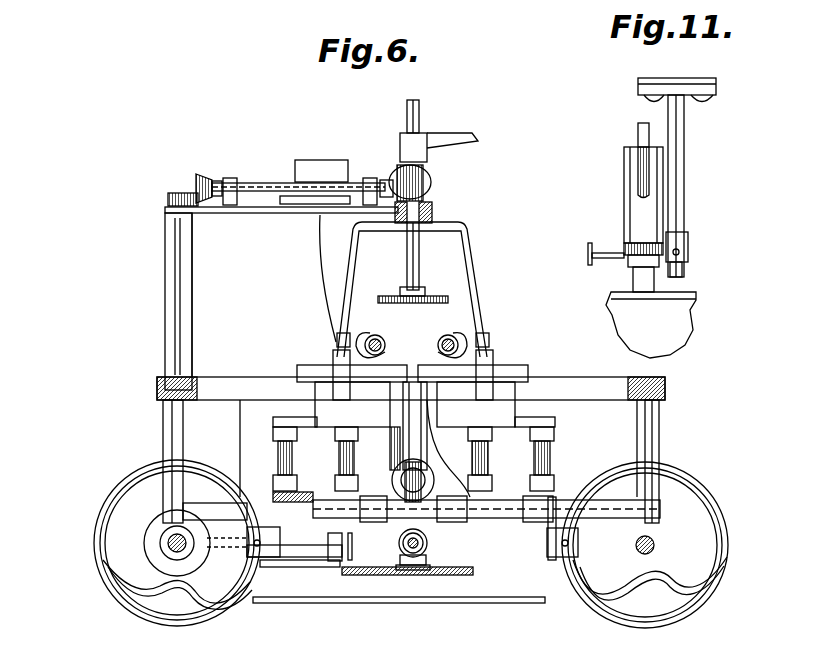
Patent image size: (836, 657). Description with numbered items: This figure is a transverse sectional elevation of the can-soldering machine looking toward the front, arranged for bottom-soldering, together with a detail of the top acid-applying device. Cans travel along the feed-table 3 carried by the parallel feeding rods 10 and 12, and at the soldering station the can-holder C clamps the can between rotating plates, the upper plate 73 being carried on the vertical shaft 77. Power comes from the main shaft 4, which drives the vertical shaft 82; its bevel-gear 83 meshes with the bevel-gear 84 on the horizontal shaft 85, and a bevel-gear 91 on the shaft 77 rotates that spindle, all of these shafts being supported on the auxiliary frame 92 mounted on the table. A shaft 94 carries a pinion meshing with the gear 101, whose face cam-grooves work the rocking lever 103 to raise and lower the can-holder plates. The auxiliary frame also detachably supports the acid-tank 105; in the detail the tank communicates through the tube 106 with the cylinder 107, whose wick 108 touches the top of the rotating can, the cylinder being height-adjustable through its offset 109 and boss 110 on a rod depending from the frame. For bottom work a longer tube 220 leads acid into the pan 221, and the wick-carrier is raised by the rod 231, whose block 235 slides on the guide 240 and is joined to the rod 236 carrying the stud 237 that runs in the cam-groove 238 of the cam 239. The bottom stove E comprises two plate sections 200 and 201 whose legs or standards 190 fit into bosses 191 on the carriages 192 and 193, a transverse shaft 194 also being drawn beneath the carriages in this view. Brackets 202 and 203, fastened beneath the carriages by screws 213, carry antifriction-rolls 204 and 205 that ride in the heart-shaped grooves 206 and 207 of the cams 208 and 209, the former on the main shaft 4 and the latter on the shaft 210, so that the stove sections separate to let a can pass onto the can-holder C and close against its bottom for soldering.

In FIG. 6, the feed-table 3 is at (580, 378).
In FIG. 6, the main shaft 4 is at (180, 533).
In FIG. 6, the rod 10 is at (376, 335).
In FIG. 6, the rod 12 is at (448, 335).
In FIG. 6, the upper plate 73 is at (440, 296).
In FIG. 6, the shaft 77 is at (419, 254).
In FIG. 6, the vertical shaft 82 is at (190, 288).
In FIG. 6, the bevel-gear 83 is at (172, 196).
In FIG. 6, the bevel-gear 84 is at (206, 175).
In FIG. 6, the horizontal shaft 85 is at (258, 183).
In FIG. 6, the bevel-gear 91 is at (432, 180).
In FIG. 6, the auxiliary frame 92 is at (354, 262).
In FIG. 11, the auxiliary frame 92 is at (693, 79).
In FIG. 6, the shaft 94 is at (416, 560).
In FIG. 6, the gear 101 is at (402, 464).
In FIG. 6, the rocking lever 103 is at (397, 480).
In FIG. 6, the acid-tank 105 is at (322, 160).
In FIG. 11, the tube 106 is at (640, 134).
In FIG. 11, the cylinder 107 is at (624, 200).
In FIG. 11, the wick 108 is at (634, 290).
In FIG. 11, the offset 109 is at (688, 236).
In FIG. 11, the boss 110 is at (690, 252).
In FIG. 6, the legs or standards 190 is at (284, 458).
In FIG. 6, the bosses 191 is at (279, 478).
In FIG. 6, the carriage 192 is at (320, 492).
In FIG. 6, the carriage 193 is at (498, 500).
In FIG. 6, the shaft 194 is at (508, 520).
In FIG. 6, the bottom-plate section 200 is at (312, 365).
In FIG. 6, the bottom-plate section 201 is at (518, 366).
In FIG. 6, the bracket 202 is at (275, 560).
In FIG. 6, the bracket 203 is at (545, 565).
In FIG. 6, the antifriction-roll 204 is at (262, 565).
In FIG. 6, the antifriction-roll 205 is at (560, 580).
In FIG. 6, the heart-shaped groove 206 is at (224, 605).
In FIG. 6, the heart-shaped groove 207 is at (612, 606).
In FIG. 6, the cam 208 is at (142, 612).
In FIG. 6, the cam 209 is at (700, 598).
In FIG. 6, the shaft 210 is at (660, 545).
In FIG. 6, the screws 213 is at (288, 507).
In FIG. 6, the tube 220 is at (318, 264).
In FIG. 6, the bevel-gear 221 is at (711, 650).
In FIG. 6, the rod 231 is at (300, 466).
In FIG. 6, the block 235 is at (336, 565).
In FIG. 6, the rod 236 is at (345, 544).
In FIG. 6, the stud 237 is at (165, 575).
In FIG. 6, the cam-groove 238 is at (160, 538).
In FIG. 6, the cam 239 is at (152, 544).
In FIG. 6, the guide 240 is at (350, 560).
In FIG. 6, the can-holder C is at (410, 340).
In FIG. 6, the bottom stove E is at (297, 370).